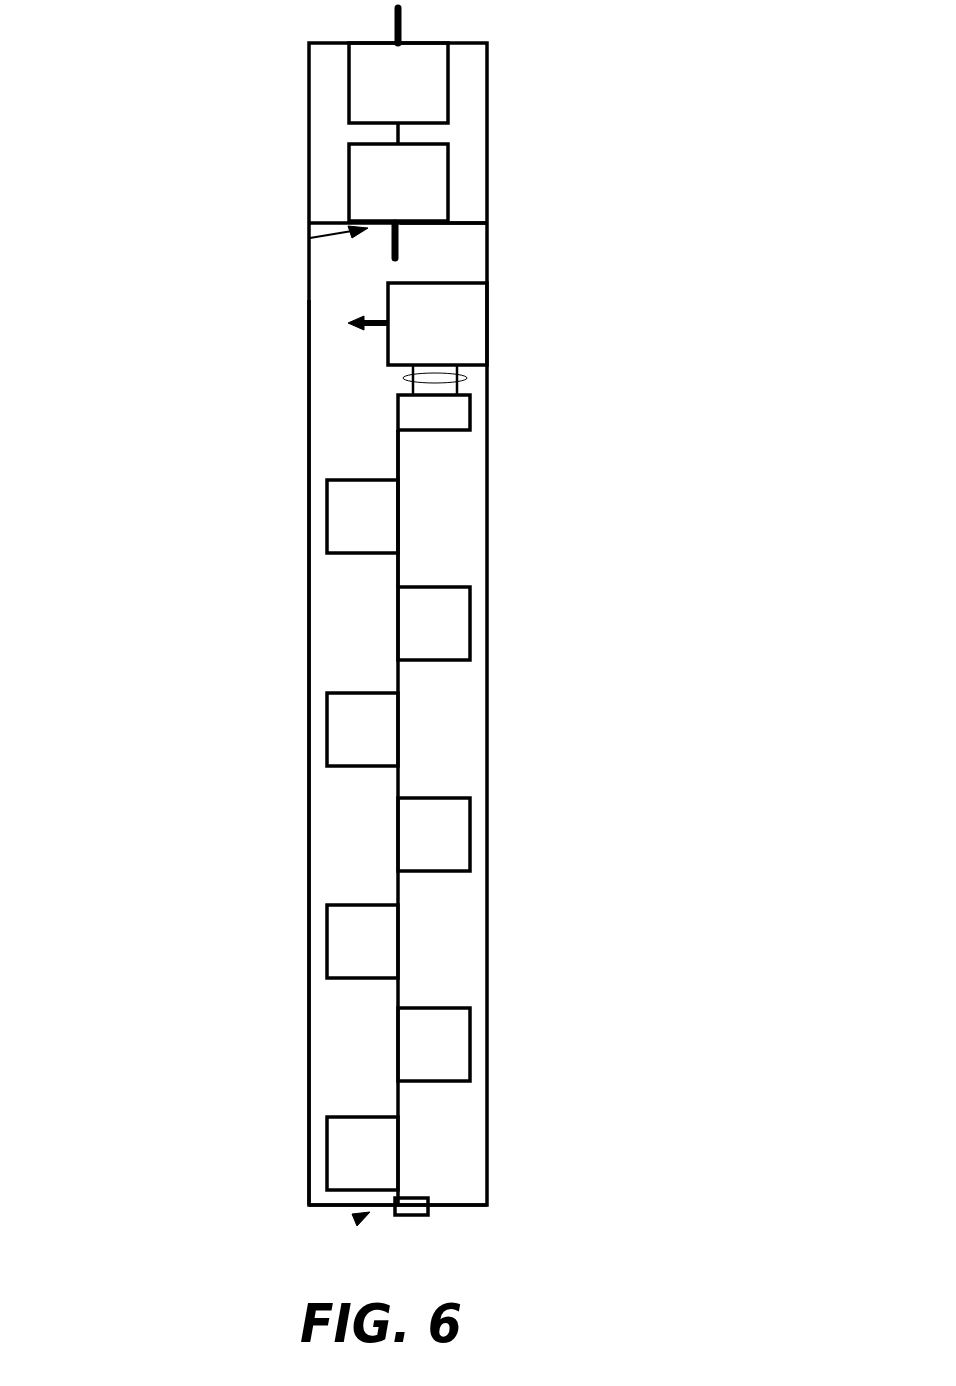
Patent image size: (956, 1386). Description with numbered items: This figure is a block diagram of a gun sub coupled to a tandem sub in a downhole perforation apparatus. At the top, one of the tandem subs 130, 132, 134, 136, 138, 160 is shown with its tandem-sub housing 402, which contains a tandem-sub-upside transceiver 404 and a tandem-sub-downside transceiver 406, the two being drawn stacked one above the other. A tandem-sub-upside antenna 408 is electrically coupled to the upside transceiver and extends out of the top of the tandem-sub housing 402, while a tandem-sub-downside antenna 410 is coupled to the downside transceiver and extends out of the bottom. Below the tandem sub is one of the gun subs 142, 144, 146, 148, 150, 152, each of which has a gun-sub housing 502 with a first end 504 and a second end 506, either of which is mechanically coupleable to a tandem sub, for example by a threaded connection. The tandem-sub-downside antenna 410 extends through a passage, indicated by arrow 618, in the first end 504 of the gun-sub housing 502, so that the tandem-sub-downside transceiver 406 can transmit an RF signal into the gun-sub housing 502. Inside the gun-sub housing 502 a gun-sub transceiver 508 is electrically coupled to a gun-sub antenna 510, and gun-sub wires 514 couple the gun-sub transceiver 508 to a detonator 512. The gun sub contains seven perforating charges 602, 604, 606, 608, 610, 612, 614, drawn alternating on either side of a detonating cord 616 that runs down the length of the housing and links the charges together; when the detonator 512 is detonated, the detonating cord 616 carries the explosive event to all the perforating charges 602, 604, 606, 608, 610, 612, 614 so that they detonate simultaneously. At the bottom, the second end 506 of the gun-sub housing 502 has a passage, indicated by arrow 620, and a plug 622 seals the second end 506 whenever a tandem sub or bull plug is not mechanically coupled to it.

The tandem sub 130 is at (300, 624).
The tandem sub 132 is at (300, 624).
The tandem sub 134 is at (300, 624).
The tandem sub 136 is at (300, 624).
The tandem sub 138 is at (300, 624).
The memory array layer 160 is at (309, 133).
The gun sub 142 is at (187, 752).
The gun sub 144 is at (187, 752).
The gun sub 146 is at (187, 752).
The gun sub 148 is at (187, 752).
The gun sub 150 is at (187, 752).
The gun sub 152 is at (309, 358).
The tandem-sub housing 402 is at (487, 120).
The tandem-sub-upside transceiver 404 is at (448, 82).
The tandem-sub-downside transceiver 406 is at (448, 183).
The tandem-sub-upside antenna 408 is at (405, 18).
The tandem-sub-downside antenna 410 is at (390, 251).
The gun-sub housing 502 is at (488, 470).
The first end 504 is at (470, 221).
The second end 506 is at (455, 1207).
The gun-sub transceiver 508 is at (445, 283).
The gun-sub antenna 510 is at (350, 320).
The detonator 512 is at (470, 410).
The gun-sub wires 514 is at (403, 378).
The perforating charge 602 is at (327, 521).
The perforating charge 604 is at (470, 622).
The perforating charge 606 is at (327, 733).
The perforating charge 608 is at (470, 833).
The perforating charge 610 is at (327, 945).
The perforating charge 612 is at (470, 1045).
The perforating charge 614 is at (327, 1155).
The detonating cord 616 is at (398, 575).
The arrow indicating passage 618 is at (310, 238).
The arrow indicating passage 620 is at (356, 1219).
The plug 622 is at (415, 1215).